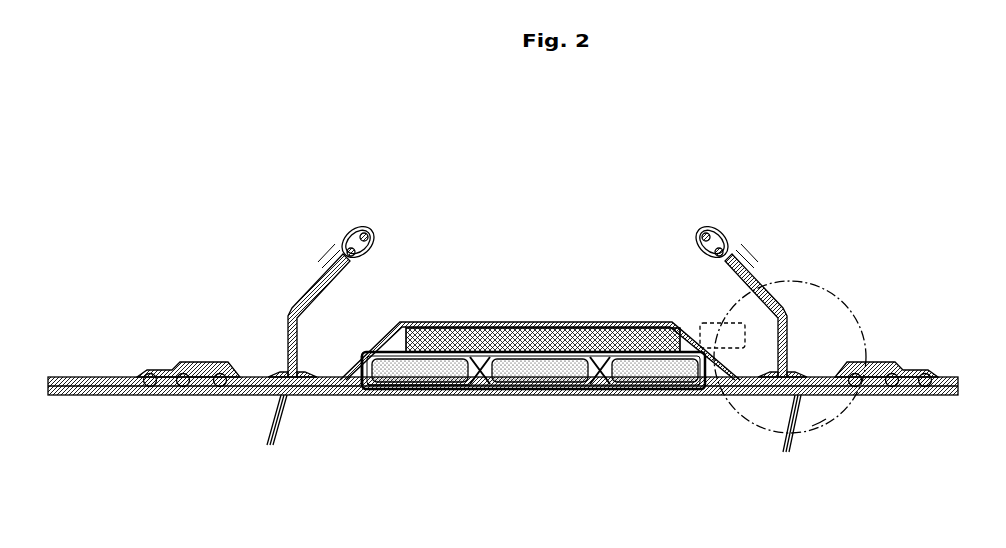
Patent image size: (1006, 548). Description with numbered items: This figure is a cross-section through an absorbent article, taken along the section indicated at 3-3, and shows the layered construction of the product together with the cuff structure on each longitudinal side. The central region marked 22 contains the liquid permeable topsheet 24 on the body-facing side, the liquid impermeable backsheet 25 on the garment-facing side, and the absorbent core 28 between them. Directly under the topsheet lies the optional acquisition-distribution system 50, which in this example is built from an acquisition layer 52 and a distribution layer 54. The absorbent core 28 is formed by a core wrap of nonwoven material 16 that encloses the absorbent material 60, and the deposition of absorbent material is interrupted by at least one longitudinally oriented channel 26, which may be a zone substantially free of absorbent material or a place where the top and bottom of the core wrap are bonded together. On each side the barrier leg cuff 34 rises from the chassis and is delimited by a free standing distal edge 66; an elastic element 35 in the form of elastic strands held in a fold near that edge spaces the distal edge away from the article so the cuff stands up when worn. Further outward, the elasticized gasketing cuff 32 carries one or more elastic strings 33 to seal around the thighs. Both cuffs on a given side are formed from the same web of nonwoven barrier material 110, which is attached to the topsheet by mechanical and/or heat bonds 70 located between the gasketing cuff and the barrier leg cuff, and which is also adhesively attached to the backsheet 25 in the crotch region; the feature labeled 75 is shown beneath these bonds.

The section line 3-3 is at (830, 433).
The nonwoven material 16 is at (683, 395).
The assembly 22 is at (556, 344).
The liquid permeable topsheet 24 is at (556, 322).
The liquid impermeable backsheet 25 is at (418, 395).
The channel 26 is at (478, 395).
The absorbent core 28 is at (335, 395).
The elasticized gasketing cuff 32 is at (164, 351).
The elastic string 33 is at (152, 395).
The barrier leg cuff 34 is at (306, 260).
The elastic element 35 is at (350, 243).
The acquisition-distribution system 50 is at (736, 336).
The acquisition layer 52 is at (510, 322).
The distribution layer 54 is at (455, 322).
The absorbent material 60 is at (433, 395).
The free standing distal edge 66 is at (372, 230).
The mechanical and/or heat bonds 70 is at (282, 375).
The fastening seam 75 is at (530, 440).
The nonwoven barrier material 110 is at (782, 288).